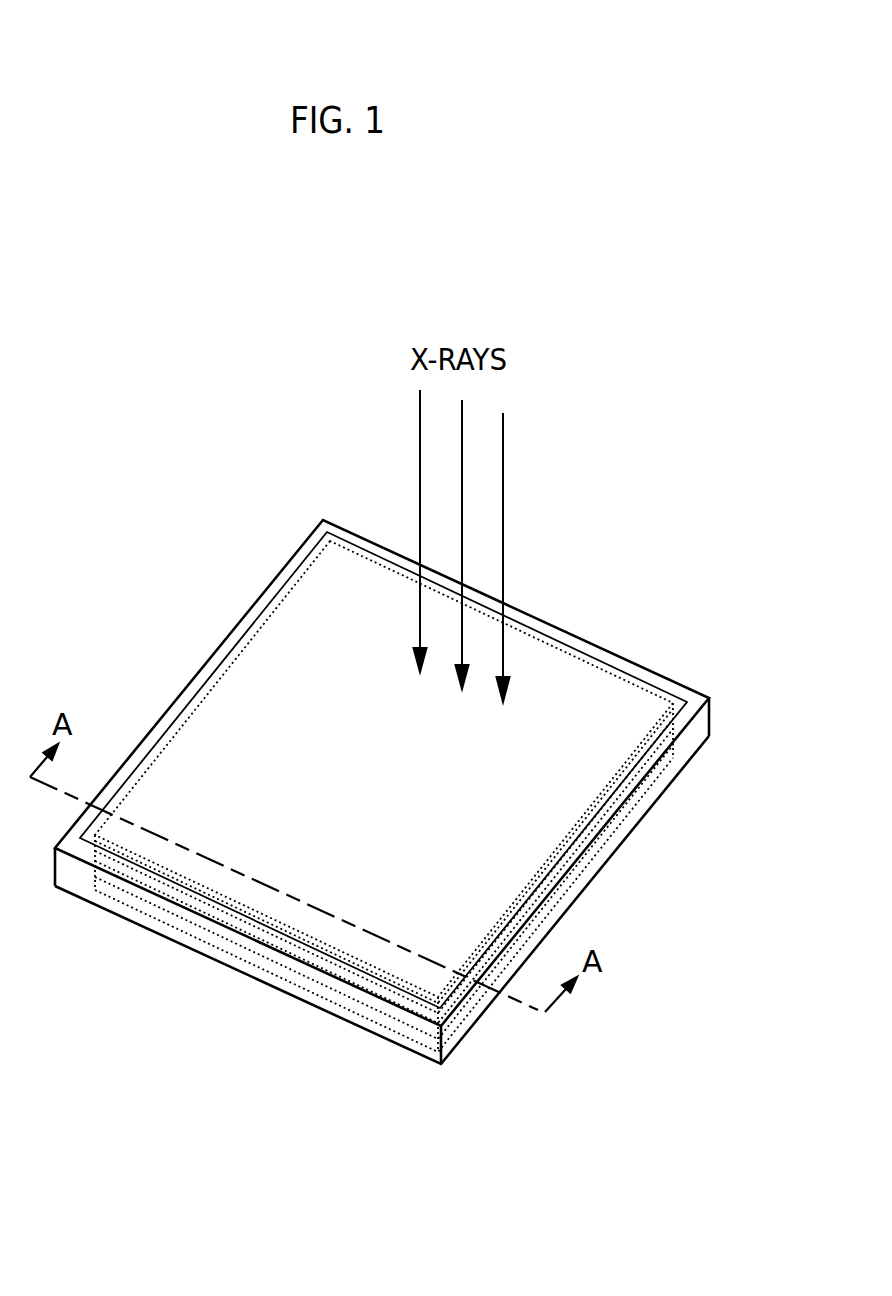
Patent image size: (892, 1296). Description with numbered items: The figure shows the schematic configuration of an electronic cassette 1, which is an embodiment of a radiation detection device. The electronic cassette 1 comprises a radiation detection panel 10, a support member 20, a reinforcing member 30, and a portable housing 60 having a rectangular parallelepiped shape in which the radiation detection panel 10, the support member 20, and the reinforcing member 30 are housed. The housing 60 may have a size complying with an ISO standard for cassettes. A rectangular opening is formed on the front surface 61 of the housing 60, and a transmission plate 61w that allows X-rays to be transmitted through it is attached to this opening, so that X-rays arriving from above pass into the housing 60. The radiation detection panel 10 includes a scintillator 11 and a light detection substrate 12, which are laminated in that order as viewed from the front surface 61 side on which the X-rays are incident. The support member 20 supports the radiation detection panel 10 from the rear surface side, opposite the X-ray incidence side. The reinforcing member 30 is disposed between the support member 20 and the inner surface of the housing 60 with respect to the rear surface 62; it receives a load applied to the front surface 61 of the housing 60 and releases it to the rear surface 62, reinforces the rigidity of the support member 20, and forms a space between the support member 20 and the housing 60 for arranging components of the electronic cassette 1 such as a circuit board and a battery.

The electronic cassette 1 is at (643, 616).
The radiation detection panel 10 is at (132, 1008).
The scintillator 11 is at (122, 852).
The light detection substrate 12 is at (158, 882).
The support member 20 is at (423, 1012).
The reinforcing member 30 is at (343, 1000).
The housing 60 is at (649, 844).
The front surface 61 is at (323, 519).
The transmission plate 61w is at (245, 632).
The rear surface 62 is at (200, 957).